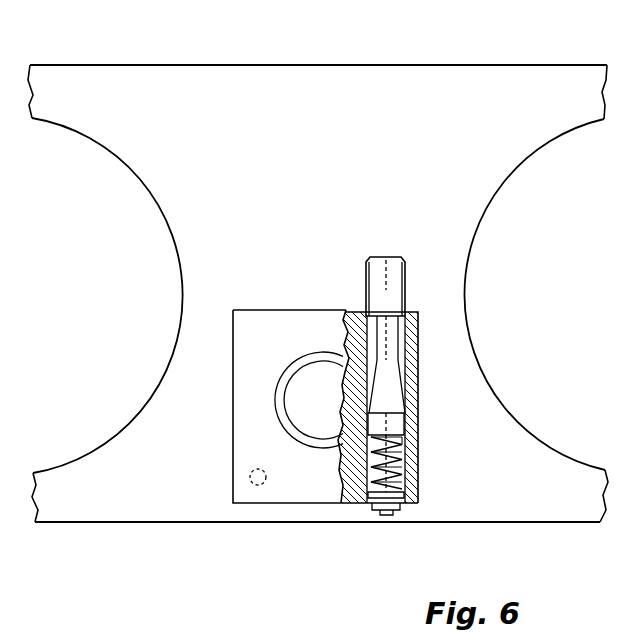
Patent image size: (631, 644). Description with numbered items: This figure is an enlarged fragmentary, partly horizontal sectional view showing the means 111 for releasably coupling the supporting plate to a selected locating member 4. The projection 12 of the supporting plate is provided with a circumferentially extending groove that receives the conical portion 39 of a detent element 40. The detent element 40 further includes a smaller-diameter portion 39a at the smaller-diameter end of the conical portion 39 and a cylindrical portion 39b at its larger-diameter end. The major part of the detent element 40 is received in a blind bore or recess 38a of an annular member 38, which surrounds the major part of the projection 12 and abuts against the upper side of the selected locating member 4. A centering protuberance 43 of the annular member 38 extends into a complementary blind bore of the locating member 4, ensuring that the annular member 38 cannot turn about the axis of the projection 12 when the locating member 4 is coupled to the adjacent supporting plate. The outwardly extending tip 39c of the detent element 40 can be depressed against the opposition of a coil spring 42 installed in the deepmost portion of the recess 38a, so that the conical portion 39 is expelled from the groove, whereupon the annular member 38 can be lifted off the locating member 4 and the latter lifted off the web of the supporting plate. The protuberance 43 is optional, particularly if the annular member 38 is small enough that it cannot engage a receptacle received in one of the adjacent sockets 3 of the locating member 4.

The locating member 4 is at (318, 268).
The sockets 3 is at (140, 313).
The annular member 38 is at (264, 324).
The projection 12 is at (297, 403).
The centering protuberance 43 is at (249, 477).
The conical portion 39 is at (402, 404).
The tip 39c is at (397, 276).
The smaller-diameter portion 39a is at (392, 340).
The detent element 40 is at (405, 375).
The cylindrical portion 39b is at (402, 433).
The coil spring 42 is at (390, 460).
The blind bore or recess 38a is at (397, 479).
The means for releasably coupling 111 is at (328, 504).